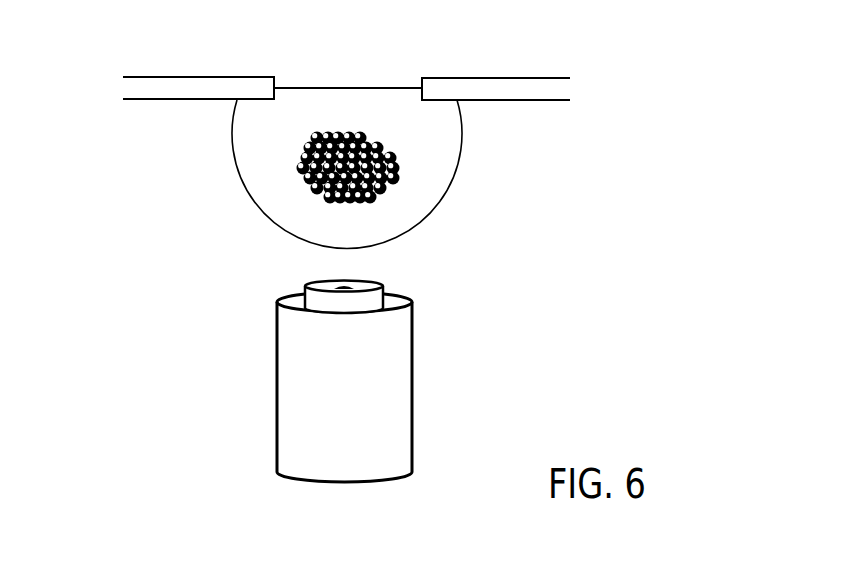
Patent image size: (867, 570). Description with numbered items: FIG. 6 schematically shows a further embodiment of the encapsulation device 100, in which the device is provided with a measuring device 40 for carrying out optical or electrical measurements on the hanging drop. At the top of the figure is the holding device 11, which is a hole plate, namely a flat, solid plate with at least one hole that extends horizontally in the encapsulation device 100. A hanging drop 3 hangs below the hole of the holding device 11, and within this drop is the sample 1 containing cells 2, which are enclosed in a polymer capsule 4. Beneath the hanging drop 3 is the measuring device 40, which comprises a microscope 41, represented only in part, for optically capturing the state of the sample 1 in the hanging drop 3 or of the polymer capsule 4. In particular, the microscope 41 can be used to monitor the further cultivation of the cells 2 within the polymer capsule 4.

The sample 1 is at (291, 179).
The cells 2 is at (313, 175).
The hanging drop 3 is at (405, 174).
The polymer capsule 4 is at (450, 180).
The holding device 11 is at (202, 88).
The measuring device 40 is at (282, 382).
The microscope 41 is at (366, 400).
The encapsulation device 100 is at (645, 111).